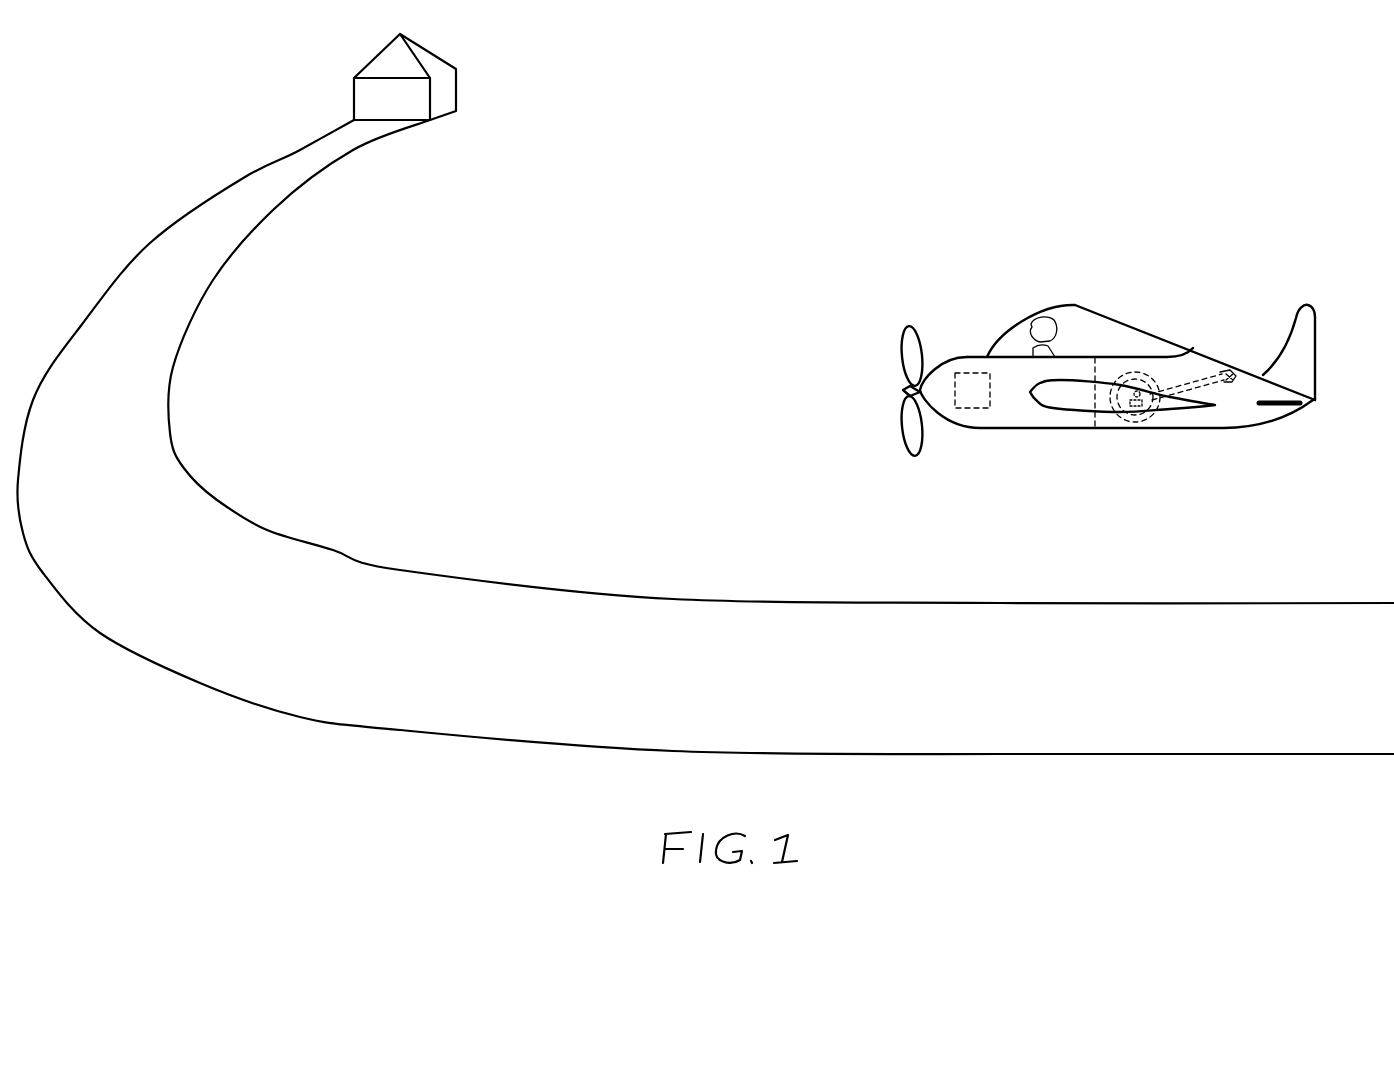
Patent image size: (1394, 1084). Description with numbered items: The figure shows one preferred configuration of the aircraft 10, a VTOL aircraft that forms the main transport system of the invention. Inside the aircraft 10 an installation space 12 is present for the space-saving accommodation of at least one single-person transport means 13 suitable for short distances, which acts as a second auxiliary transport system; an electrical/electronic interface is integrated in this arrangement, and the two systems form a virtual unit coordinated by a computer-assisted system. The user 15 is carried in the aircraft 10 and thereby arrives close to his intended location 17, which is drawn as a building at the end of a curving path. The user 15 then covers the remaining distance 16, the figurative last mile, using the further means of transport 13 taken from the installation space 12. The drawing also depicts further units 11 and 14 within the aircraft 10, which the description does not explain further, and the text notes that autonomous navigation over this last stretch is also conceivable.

The aircraft 10 is at (1132, 323).
The control unit 11 is at (972, 398).
The installation space 12 is at (1232, 413).
The single-person transport means 13 is at (1208, 373).
The sensor unit 14 is at (1133, 408).
The user 15 is at (1052, 316).
The remaining distance 16 is at (245, 192).
The intended location 17 is at (445, 93).